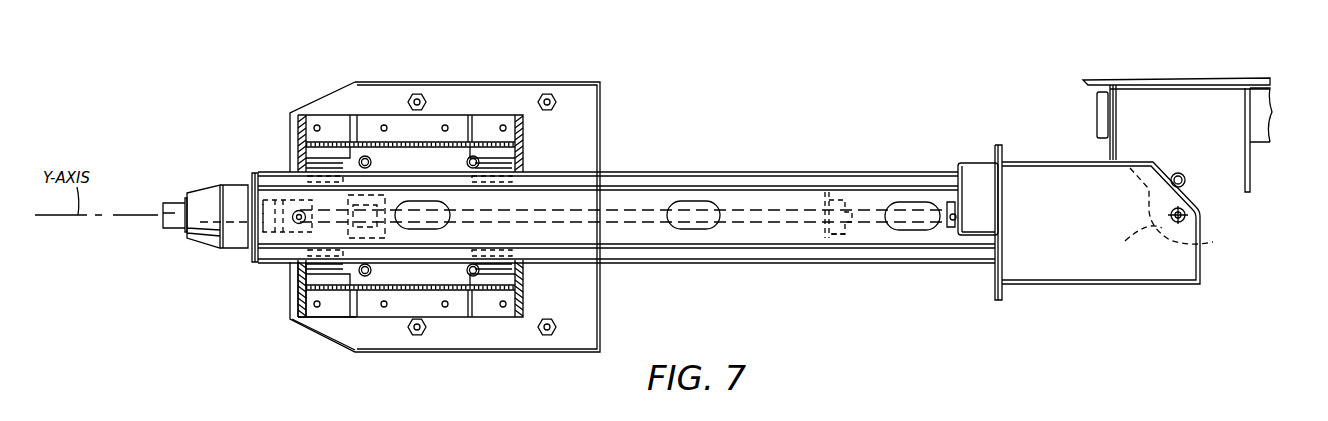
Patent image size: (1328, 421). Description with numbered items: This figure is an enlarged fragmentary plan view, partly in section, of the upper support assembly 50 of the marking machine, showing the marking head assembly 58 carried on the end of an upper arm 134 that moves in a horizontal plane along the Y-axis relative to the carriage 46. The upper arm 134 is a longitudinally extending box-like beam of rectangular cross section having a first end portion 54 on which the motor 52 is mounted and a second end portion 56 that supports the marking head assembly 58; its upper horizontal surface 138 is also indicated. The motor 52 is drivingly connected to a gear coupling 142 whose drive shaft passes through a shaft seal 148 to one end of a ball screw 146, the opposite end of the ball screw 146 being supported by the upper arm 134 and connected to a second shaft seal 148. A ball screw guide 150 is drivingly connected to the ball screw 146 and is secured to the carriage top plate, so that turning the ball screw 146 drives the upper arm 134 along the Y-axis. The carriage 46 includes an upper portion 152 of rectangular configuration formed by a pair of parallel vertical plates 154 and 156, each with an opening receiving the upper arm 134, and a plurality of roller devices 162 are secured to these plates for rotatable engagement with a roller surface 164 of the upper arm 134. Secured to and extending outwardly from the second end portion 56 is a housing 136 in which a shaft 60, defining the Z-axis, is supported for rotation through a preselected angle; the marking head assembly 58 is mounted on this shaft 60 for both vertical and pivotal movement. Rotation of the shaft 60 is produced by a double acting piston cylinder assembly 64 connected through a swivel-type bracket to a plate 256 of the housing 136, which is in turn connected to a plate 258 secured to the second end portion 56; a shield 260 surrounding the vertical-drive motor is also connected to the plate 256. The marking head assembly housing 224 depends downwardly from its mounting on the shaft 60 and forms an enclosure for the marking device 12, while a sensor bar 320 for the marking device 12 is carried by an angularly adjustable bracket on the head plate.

The marking device 12 is at (1097, 113).
The carriage 46 is at (522, 361).
The upper support assembly 50 is at (684, 98).
The motor 52 is at (212, 195).
The first end portion 54 is at (258, 180).
The second end portion 56 is at (932, 235).
The marking head assembly 58 is at (1120, 64).
The shaft 60 is at (1162, 215).
The double acting piston cylinder assembly 64 is at (1204, 196).
The upper arm 134 is at (687, 263).
The housing 136 is at (1055, 275).
The upper horizontal surface 138 is at (855, 235).
The gear coupling 142 is at (272, 232).
The ball screw 146 is at (742, 215).
The shaft seal 148 is at (293, 198).
The ball screw guide 150 is at (383, 230).
The carriage upper portion 152 is at (350, 332).
The vertical plate 154 is at (300, 288).
The vertical plate 156 is at (522, 278).
The roller devices 162 is at (365, 156).
The roller surface 164 is at (393, 170).
The marking head assembly housing 224 is at (1250, 153).
The plate 256 is at (1003, 146).
The plate 258 is at (995, 298).
The shield 260 is at (967, 162).
The sensor bar 320 is at (1260, 78).